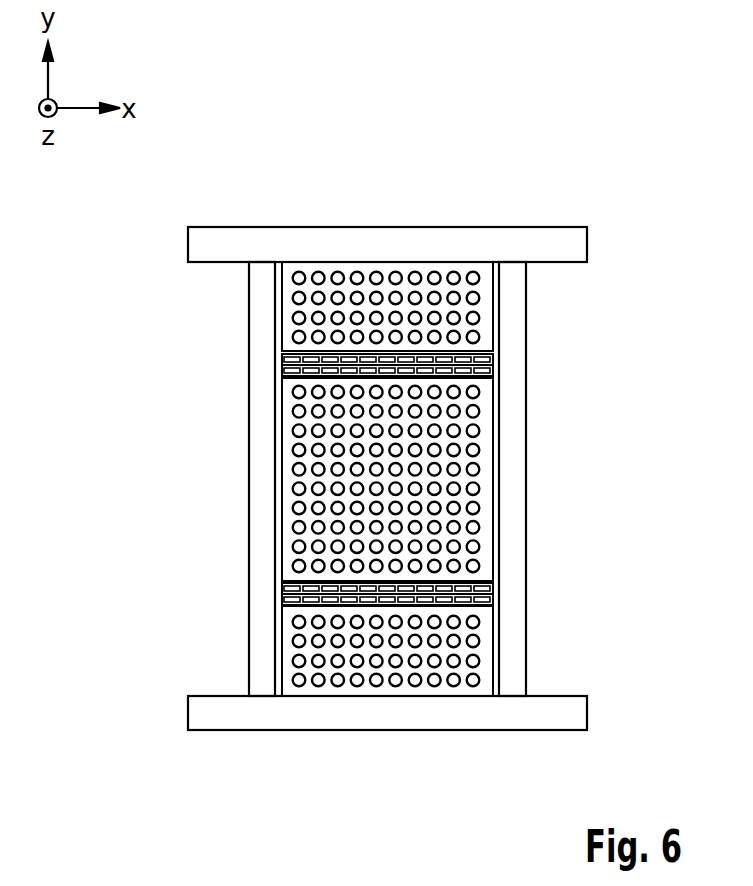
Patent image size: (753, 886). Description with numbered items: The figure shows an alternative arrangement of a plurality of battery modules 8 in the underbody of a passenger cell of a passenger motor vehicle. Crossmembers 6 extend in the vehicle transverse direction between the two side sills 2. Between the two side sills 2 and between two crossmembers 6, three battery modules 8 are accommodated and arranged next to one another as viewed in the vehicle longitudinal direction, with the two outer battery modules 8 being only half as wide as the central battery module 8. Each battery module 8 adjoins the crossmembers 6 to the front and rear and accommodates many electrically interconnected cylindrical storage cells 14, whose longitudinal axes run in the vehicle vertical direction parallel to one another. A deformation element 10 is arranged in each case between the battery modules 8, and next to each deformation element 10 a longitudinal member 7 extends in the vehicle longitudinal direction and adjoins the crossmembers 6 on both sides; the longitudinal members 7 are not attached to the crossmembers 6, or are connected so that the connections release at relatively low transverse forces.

The side sill 2 is at (461, 237).
The crossmember 6 is at (252, 535).
The longitudinal member 7 is at (493, 368).
The battery module 8 is at (424, 431).
The deformation element 10 is at (282, 357).
The storage cell 14 is at (302, 272).